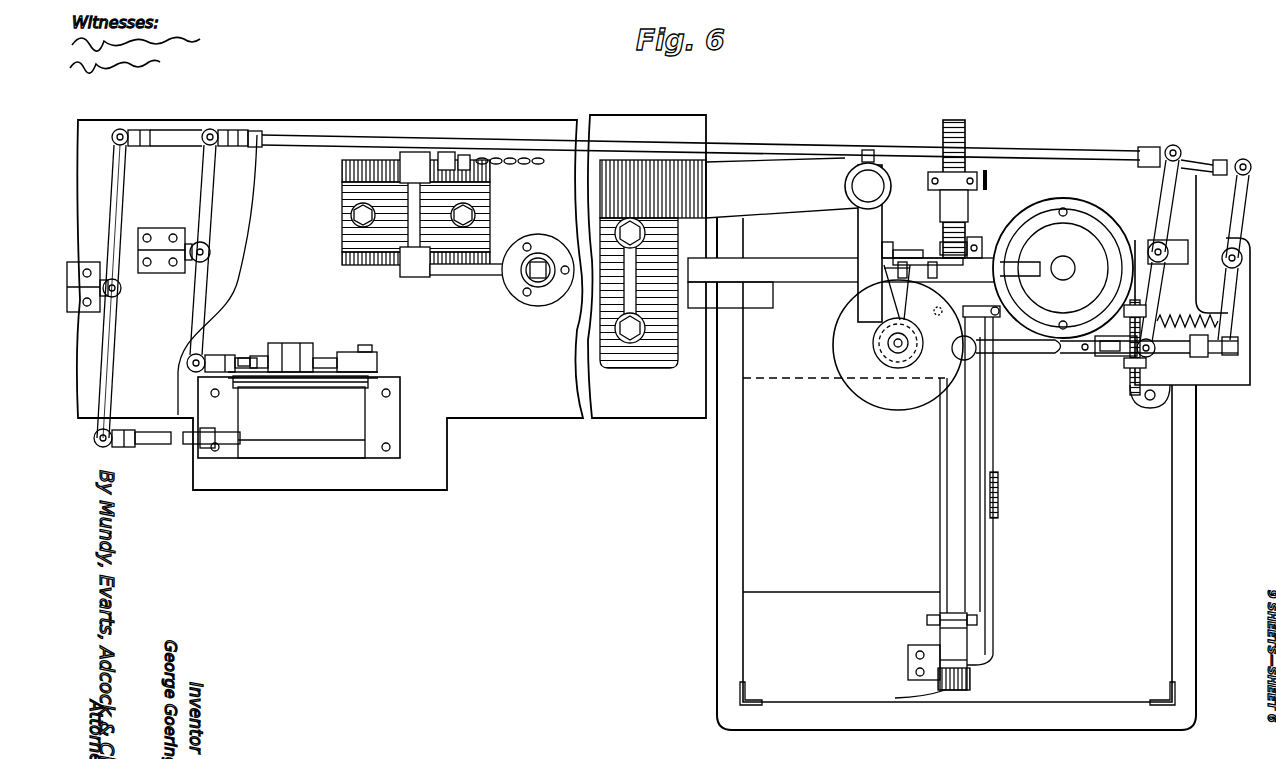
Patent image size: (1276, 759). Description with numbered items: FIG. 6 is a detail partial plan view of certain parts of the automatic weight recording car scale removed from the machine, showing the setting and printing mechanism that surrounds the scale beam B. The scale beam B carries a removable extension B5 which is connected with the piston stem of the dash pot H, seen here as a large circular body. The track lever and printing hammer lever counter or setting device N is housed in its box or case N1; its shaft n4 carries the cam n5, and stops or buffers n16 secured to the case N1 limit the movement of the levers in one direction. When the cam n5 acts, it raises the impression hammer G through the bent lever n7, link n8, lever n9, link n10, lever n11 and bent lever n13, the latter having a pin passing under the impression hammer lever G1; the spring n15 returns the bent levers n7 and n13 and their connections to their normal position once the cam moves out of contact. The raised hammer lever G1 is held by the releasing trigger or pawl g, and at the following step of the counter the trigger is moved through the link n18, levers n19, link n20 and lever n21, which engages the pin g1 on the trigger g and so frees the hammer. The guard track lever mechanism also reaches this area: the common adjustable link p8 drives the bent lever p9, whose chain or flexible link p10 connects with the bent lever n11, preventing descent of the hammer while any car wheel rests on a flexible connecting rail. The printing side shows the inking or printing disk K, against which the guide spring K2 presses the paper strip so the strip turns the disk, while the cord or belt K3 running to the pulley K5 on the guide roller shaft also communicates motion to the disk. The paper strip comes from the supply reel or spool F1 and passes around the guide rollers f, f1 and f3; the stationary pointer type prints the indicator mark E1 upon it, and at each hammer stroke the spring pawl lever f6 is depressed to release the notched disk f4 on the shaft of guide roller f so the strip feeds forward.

The link n20 is at (183, 136).
The link n10 is at (266, 138).
The levers n19 is at (128, 173).
The link n18 is at (800, 150).
The lever n9 is at (190, 290).
The bent lever p9 is at (345, 162).
The chain or flexible link p10 is at (516, 162).
The common adjustable link p8 is at (543, 288).
The link n8 is at (243, 357).
The cam n5 is at (259, 356).
The shaft n4 is at (293, 343).
The bent lever n7 is at (328, 353).
The stops or buffers n16 is at (187, 444).
The box or case N1 is at (363, 416).
The track lever and printing hammer lever counter or setting device N is at (300, 417).
The scale beam B is at (790, 268).
The pulley K5 is at (895, 245).
The cord or belt K3 is at (888, 280).
The guide roller f3 is at (942, 252).
The supply reel or spool F1 is at (955, 122).
The removable extension B5 is at (1002, 257).
The dash pot H is at (1063, 268).
The lever n11 is at (1162, 176).
The lever n21 is at (1234, 186).
The impression hammer G is at (975, 354).
The lever G1 is at (1082, 356).
The guide spring K2 is at (983, 314).
The spring n15 is at (1140, 372).
The bent lever n13 is at (1118, 358).
The pin g1 is at (1230, 352).
The releasing trigger or pawl g is at (1212, 352).
The inking or printing disk K is at (876, 401).
The spring pawl lever f6 is at (994, 424).
The indicator mark E1 is at (955, 480).
The guide roller f1 is at (950, 618).
The notched disk f4 is at (972, 674).
The guide roller f is at (895, 698).